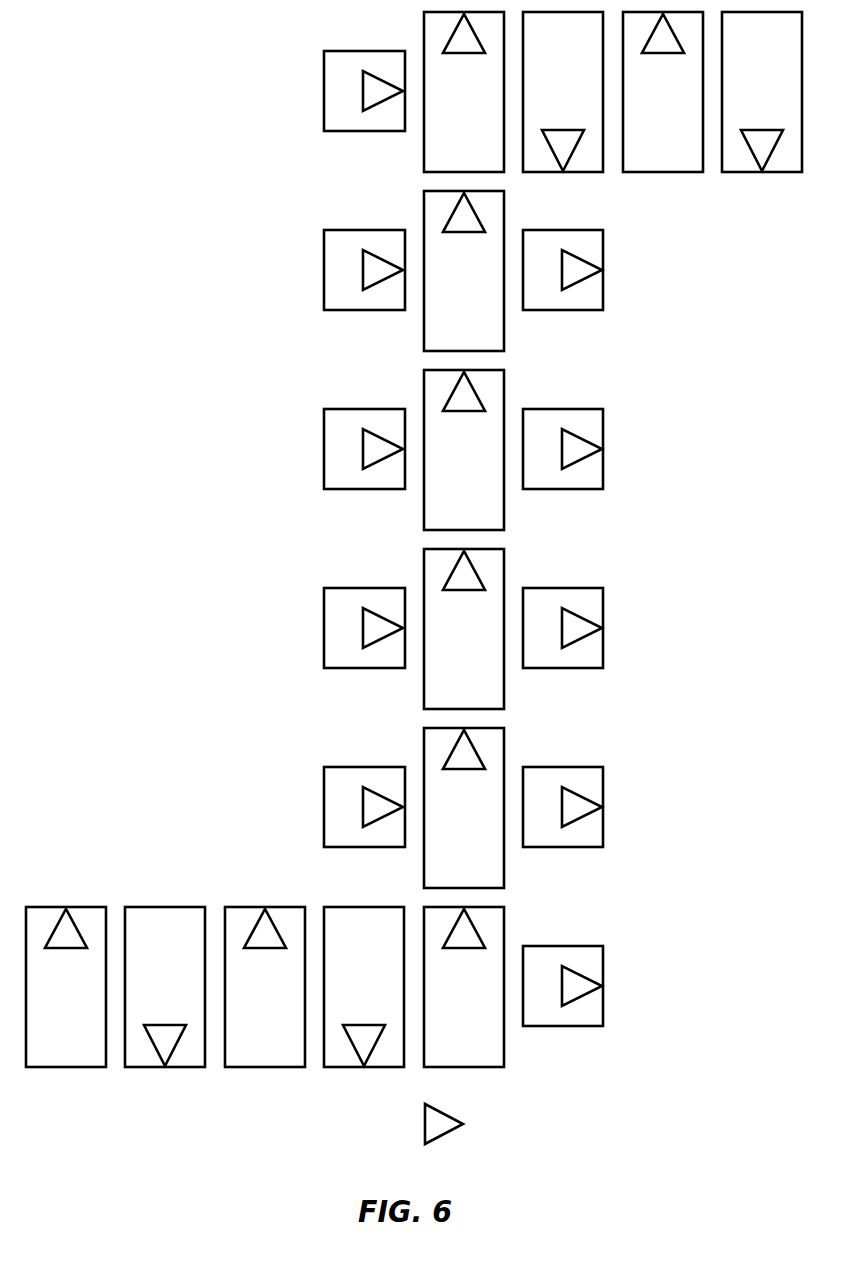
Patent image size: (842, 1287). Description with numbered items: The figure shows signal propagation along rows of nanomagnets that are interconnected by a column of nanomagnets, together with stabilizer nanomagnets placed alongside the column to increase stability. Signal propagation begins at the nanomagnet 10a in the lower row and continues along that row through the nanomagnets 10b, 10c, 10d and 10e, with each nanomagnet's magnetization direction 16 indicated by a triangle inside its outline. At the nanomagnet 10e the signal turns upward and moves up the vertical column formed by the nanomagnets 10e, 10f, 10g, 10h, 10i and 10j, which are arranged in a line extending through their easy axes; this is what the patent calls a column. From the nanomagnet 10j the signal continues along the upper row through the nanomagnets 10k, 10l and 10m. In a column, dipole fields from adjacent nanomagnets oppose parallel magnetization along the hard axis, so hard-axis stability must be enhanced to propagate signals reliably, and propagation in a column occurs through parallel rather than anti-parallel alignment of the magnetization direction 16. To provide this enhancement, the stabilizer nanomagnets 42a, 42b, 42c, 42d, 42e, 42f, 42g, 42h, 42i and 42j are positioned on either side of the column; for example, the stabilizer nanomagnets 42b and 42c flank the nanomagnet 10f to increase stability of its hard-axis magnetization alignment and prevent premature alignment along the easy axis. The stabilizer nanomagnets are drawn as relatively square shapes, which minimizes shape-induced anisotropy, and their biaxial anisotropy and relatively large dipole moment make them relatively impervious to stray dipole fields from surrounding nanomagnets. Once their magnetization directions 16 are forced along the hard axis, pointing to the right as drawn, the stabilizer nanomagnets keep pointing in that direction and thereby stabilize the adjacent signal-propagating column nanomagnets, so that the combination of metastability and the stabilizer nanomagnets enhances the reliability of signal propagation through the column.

The nanomagnet 10a is at (66, 987).
The nanomagnet 10b is at (165, 987).
The nanomagnet 10c is at (265, 987).
The nanomagnet 10d is at (364, 987).
The nanomagnet 10e is at (464, 987).
The nanomagnet 10f is at (464, 808).
The nanomagnet 10g is at (464, 629).
The nanomagnet 10h is at (464, 450).
The nanomagnet 10i is at (464, 271).
The nanomagnet 10j is at (464, 92).
The nanomagnet 10k is at (563, 92).
The nanomagnet 10l is at (663, 92).
The nanomagnet 10m is at (762, 92).
The stabilizer nanomagnet 42a is at (603, 967).
The stabilizer nanomagnet 42b is at (324, 788).
The stabilizer nanomagnet 42c is at (603, 788).
The stabilizer nanomagnet 42d is at (324, 609).
The stabilizer nanomagnet 42e is at (603, 609).
The stabilizer nanomagnet 42f is at (324, 430).
The stabilizer nanomagnet 42g is at (603, 430).
The stabilizer nanomagnet 42h is at (324, 251).
The stabilizer nanomagnet 42i is at (603, 251).
The stabilizer nanomagnet 42j is at (324, 72).
The magnetization direction 16 is at (568, 1135).